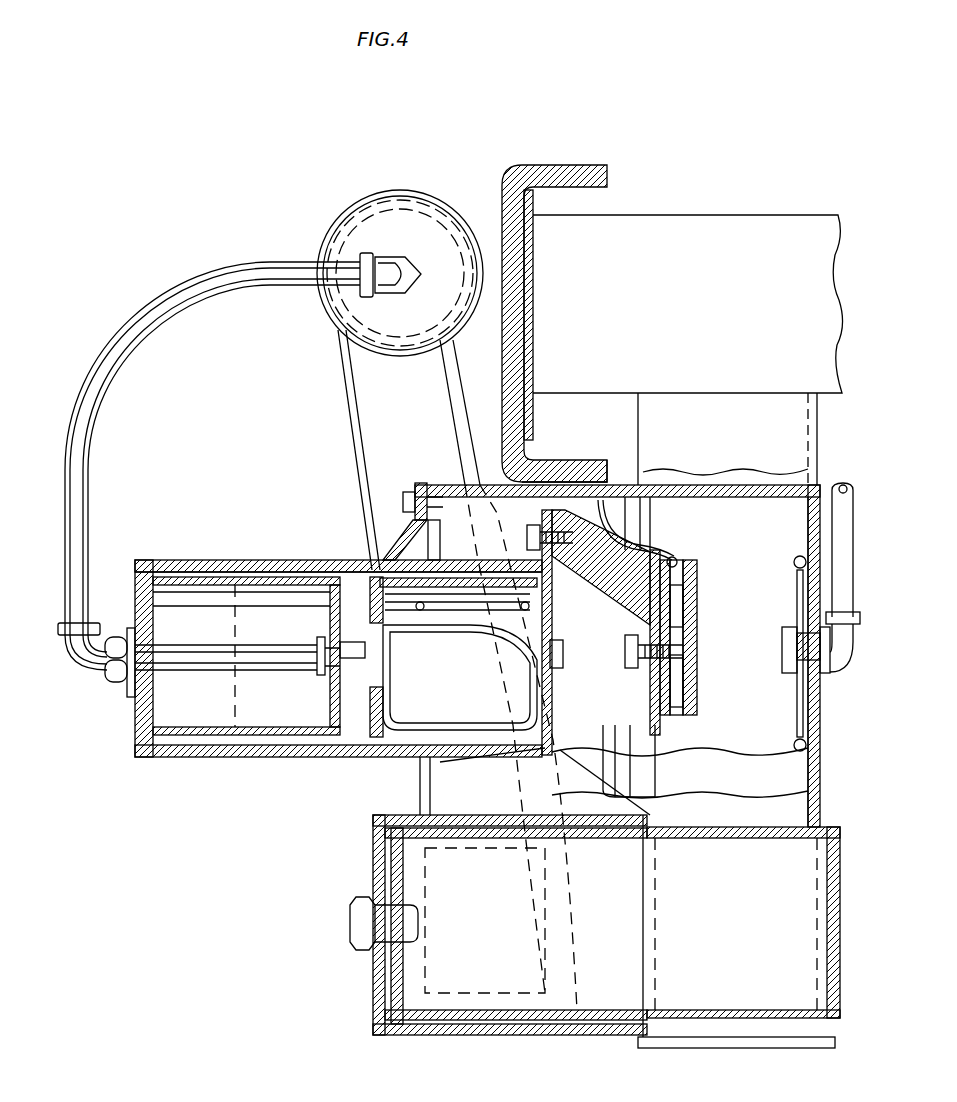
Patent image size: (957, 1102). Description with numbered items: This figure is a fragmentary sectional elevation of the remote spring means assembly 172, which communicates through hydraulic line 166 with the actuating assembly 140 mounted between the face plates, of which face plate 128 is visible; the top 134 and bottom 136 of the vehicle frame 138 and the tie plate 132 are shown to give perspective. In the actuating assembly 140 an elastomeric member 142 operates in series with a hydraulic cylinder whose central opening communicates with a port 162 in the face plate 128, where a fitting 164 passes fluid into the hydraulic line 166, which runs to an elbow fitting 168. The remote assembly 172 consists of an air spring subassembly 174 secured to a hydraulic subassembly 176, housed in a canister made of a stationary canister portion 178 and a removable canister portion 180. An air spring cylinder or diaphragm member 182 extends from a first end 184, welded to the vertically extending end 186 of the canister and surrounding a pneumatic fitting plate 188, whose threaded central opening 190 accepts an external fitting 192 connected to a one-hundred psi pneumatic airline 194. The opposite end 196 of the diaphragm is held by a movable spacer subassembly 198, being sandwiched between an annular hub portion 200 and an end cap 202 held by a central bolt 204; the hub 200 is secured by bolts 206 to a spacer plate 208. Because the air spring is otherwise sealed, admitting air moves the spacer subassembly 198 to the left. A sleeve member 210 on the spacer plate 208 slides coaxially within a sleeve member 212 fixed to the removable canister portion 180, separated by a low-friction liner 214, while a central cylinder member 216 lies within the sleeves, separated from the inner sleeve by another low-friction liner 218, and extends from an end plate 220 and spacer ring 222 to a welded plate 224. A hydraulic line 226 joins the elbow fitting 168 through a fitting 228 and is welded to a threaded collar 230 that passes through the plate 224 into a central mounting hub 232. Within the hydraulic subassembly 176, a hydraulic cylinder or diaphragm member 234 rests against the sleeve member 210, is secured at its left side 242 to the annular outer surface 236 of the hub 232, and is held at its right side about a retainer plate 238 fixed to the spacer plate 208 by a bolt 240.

The face plate 128 is at (371, 225).
The tie plate 132 is at (372, 852).
The top of vehicle frame 134 is at (578, 165).
The bottom of vehicle frame 136 is at (620, 487).
The vehicle frame 138 is at (620, 183).
The actuating assembly 140 is at (418, 185).
The elastomeric member 142 is at (335, 222).
The port 162 is at (412, 257).
The fitting 164 is at (372, 253).
The hydraulic line 166 is at (140, 305).
The elbow fitting 168 is at (85, 672).
The remote spring means assembly 172 is at (720, 470).
The air spring subassembly 174 is at (718, 752).
The hydraulic subassembly 176 is at (364, 715).
The stationary canister portion 178 is at (690, 490).
The removable canister portion 180 is at (412, 538).
The air spring cylinder or diaphragm member 182 is at (755, 497).
The first end of air spring cylinder 184 is at (806, 520).
The vertically extending end of canister portion 186 is at (822, 725).
The pneumatic fitting plate 188 is at (797, 700).
The central opening 190 is at (785, 655).
The external fitting 192 is at (855, 642).
The pneumatic airline 194 is at (856, 523).
The opposite end of air spring cylinder 196 is at (680, 560).
The movable spacer subassembly 198 is at (705, 573).
The annular hub portion 200 is at (604, 576).
The end cap 202 is at (700, 605).
The central bolt 204 is at (690, 650).
The bolts 206 is at (540, 527).
The spacer plate 208 is at (556, 598).
The sleeve member 210 is at (492, 580).
The sleeve member 212 is at (170, 576).
The low-friction liner 214 is at (208, 572).
The central cylinder member 216 is at (187, 592).
The low-friction liner 218 is at (258, 585).
The end plate 220 is at (145, 540).
The spacer ring 222 is at (153, 702).
The plate 224 is at (330, 614).
The hydraulic line 226 is at (188, 672).
The fitting 228 is at (130, 630).
The collar 230 is at (318, 674).
The mounting hub 232 is at (368, 622).
The hydraulic cylinder or diaphragm member 234 is at (457, 588).
The annular outer surface 236 is at (338, 700).
The retainer plate 238 is at (512, 655).
The bolt 240 is at (556, 642).
The left side of hydraulic cylinder member 242 is at (432, 610).